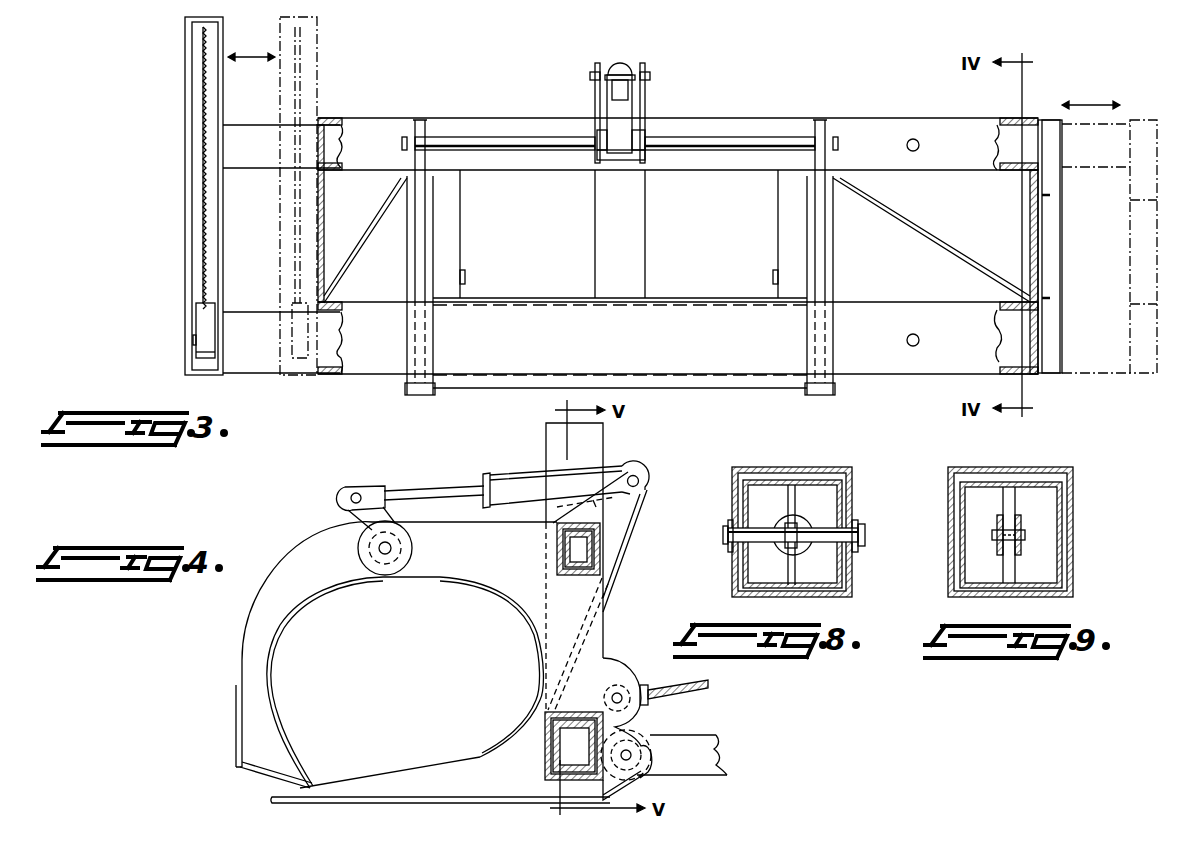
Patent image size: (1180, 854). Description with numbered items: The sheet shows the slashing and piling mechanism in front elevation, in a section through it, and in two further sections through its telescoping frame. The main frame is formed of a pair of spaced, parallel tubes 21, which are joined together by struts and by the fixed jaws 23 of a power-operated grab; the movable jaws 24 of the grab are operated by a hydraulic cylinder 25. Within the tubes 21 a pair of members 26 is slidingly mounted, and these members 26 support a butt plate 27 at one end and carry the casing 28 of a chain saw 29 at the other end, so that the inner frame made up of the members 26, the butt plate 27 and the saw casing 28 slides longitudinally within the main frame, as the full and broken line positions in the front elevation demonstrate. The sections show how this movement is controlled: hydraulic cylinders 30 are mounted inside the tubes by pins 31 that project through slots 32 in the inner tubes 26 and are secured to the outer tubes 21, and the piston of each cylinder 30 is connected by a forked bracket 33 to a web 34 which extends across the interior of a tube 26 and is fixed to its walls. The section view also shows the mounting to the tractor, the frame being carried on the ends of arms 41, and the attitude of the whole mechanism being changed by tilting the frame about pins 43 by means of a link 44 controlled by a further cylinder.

In FIG. 3, the tubes 21 is at (380, 127).
In FIG. 4, the tubes 21 is at (600, 545).
In FIG. 8, the tubes 21 is at (852, 478).
In FIG. 9, the tubes 21 is at (1073, 517).
In FIG. 4, the fixed jaws 23 is at (403, 785).
In FIG. 4, the movable jaws 24 is at (320, 553).
In FIG. 3, the hydraulic cylinder 25 is at (620, 63).
In FIG. 4, the hydraulic cylinder 25 is at (492, 482).
In FIG. 3, the members 26 is at (249, 137).
In FIG. 4, the members 26 is at (585, 558).
In FIG. 8, the members 26 is at (838, 497).
In FIG. 9, the members 26 is at (1060, 525).
In FIG. 3, the butt plate 27 is at (1036, 238).
In FIG. 3, the casing 28 is at (185, 137).
In FIG. 4, the casing 28 is at (597, 447).
In FIG. 3, the chain saw 29 is at (203, 198).
In FIG. 8, the hydraulic cylinders 30 is at (779, 520).
In FIG. 8, the pins 31 is at (818, 533).
In FIG. 8, the slots 32 is at (832, 545).
In FIG. 9, the forked bracket 33 is at (1000, 520).
In FIG. 9, the web 34 is at (1010, 500).
In FIG. 4, the arms 41 is at (700, 737).
In FIG. 4, the pins 43 is at (633, 752).
In FIG. 4, the link 44 is at (668, 688).